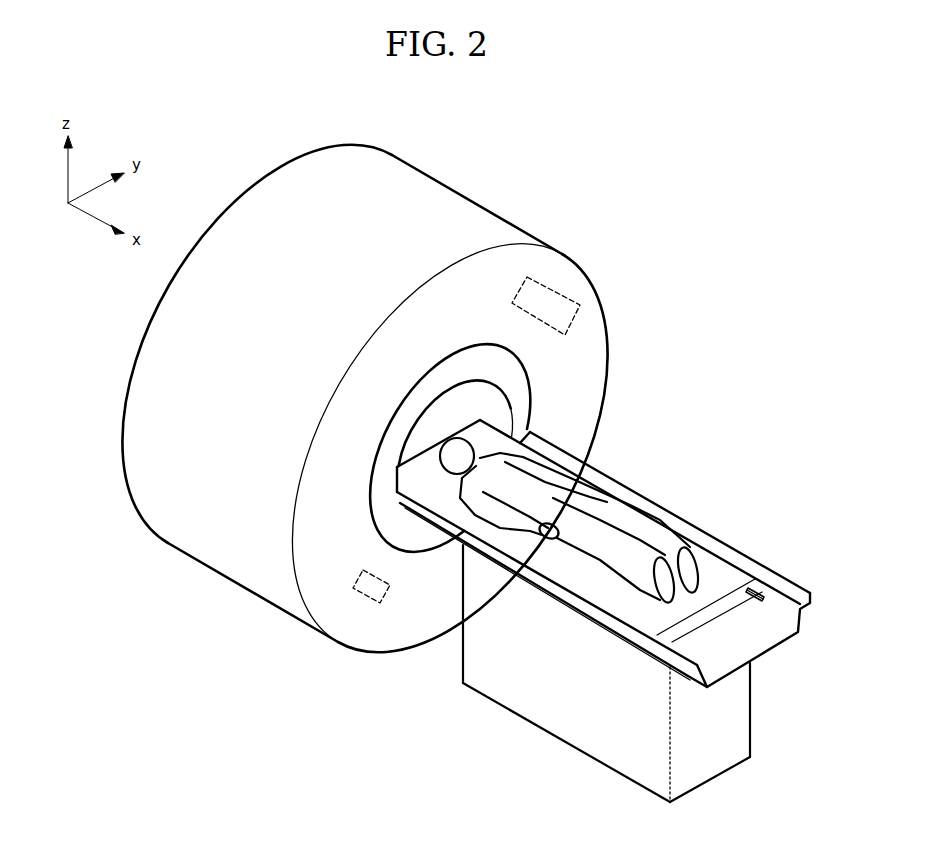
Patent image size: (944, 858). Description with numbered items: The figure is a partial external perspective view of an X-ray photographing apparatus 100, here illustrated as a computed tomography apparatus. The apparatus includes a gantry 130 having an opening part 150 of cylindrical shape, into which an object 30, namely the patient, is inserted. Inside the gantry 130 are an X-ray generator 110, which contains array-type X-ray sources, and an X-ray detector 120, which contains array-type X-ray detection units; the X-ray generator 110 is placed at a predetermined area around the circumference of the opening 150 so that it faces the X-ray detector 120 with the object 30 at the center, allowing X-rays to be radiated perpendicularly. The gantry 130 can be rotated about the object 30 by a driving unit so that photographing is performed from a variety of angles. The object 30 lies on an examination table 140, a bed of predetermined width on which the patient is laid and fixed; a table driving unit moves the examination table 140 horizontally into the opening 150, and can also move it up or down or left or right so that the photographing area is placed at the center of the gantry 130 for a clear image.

The X-ray photographing apparatus 100 is at (603, 466).
The X-ray generator 110 is at (364, 598).
The X-ray detector 120 is at (556, 291).
The gantry 130 is at (457, 210).
The examination table 140 is at (738, 593).
The opening part 150 is at (492, 401).
The object 30 is at (618, 518).